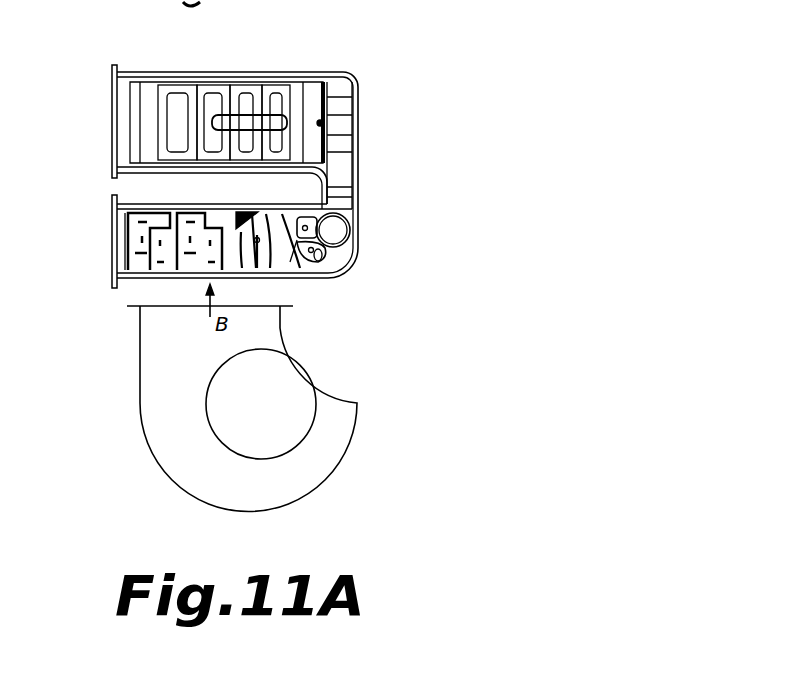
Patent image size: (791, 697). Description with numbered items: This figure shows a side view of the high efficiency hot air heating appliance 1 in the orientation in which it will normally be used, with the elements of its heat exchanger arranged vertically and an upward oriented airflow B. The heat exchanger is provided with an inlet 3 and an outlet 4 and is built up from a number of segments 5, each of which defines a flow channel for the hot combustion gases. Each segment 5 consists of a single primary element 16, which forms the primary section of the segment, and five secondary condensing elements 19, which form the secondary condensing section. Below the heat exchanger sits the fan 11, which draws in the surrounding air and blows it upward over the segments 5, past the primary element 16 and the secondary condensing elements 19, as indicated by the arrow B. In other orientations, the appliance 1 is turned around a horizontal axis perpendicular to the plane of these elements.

The hot air heating appliance 1 is at (380, 70).
The inlet 3 is at (112, 125).
The outlet 4 is at (112, 245).
The segment 5 is at (343, 142).
The fan 11 is at (320, 450).
The primary element 16 is at (220, 85).
The secondary condensing element 19 is at (325, 267).